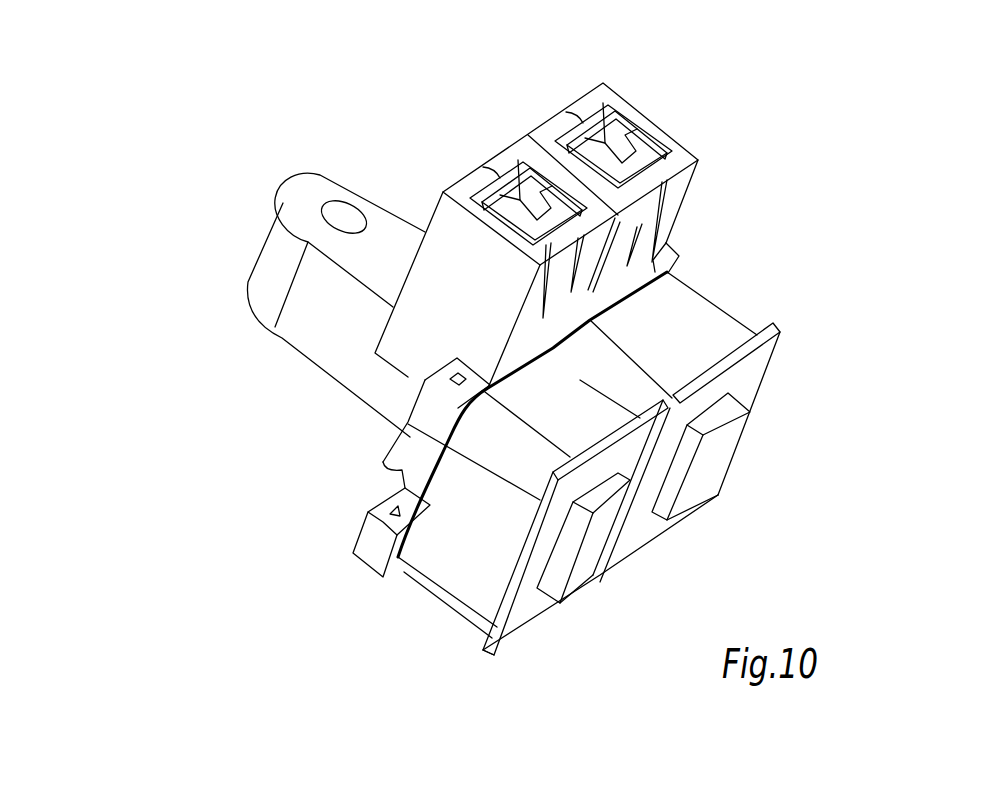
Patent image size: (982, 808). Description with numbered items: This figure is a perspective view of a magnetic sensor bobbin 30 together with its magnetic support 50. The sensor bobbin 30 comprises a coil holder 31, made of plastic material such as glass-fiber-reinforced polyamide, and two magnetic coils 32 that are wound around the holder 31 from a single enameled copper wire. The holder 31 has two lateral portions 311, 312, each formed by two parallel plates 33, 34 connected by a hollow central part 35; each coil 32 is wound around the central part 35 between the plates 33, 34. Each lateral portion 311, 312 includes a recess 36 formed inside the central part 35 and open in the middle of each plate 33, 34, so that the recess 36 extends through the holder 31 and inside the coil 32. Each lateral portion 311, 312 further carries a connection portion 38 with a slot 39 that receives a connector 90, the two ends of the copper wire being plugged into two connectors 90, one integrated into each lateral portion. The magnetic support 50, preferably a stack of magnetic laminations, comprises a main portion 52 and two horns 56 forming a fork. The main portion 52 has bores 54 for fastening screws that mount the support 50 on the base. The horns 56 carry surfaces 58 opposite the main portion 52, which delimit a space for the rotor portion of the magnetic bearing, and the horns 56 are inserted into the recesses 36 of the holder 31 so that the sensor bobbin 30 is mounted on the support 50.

The sensor bobbin 30 is at (248, 628).
The coil holder 31 is at (707, 76).
The magnetic coil 32 is at (730, 312).
The plate 33 is at (670, 248).
The plate 34 is at (772, 326).
The hollow central part 35 is at (467, 527).
The recess 36 is at (560, 555).
The connection portion 38 is at (470, 180).
The slot 39 is at (546, 200).
The magnetic support 50 is at (240, 313).
The main portion 52 is at (297, 328).
The bore 54 is at (343, 212).
The horn 56 is at (587, 557).
The surface 58 is at (607, 535).
The connector 90 is at (522, 187).
The lateral portion 311 is at (264, 458).
The lateral portion 312 is at (768, 198).